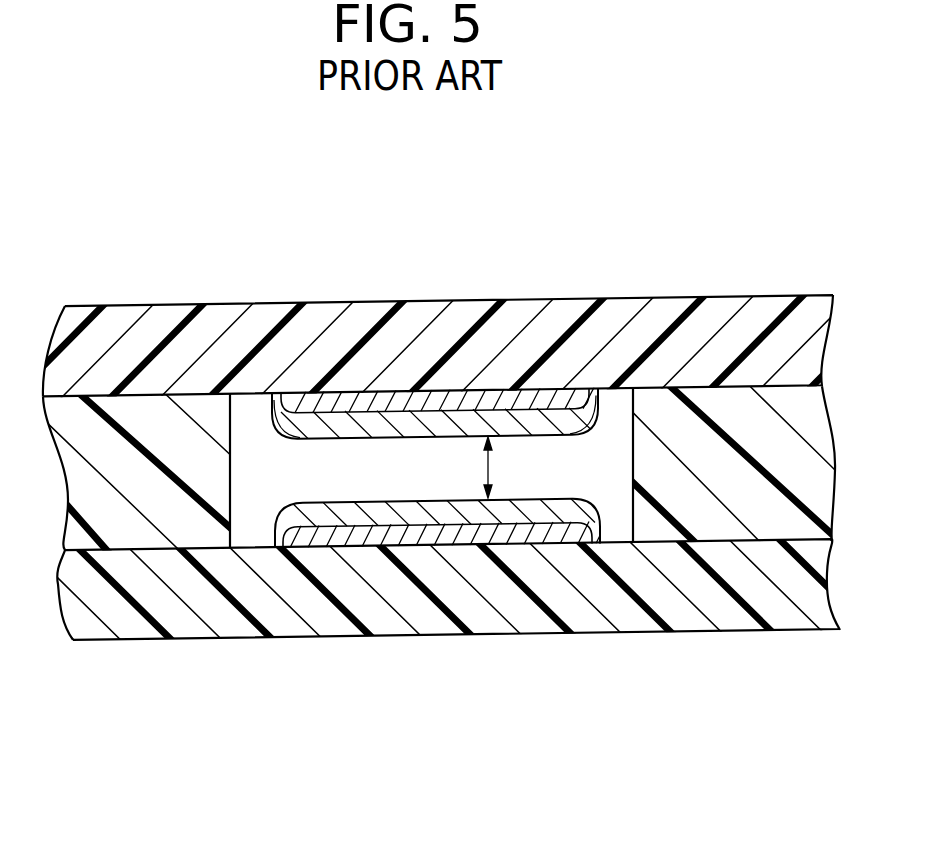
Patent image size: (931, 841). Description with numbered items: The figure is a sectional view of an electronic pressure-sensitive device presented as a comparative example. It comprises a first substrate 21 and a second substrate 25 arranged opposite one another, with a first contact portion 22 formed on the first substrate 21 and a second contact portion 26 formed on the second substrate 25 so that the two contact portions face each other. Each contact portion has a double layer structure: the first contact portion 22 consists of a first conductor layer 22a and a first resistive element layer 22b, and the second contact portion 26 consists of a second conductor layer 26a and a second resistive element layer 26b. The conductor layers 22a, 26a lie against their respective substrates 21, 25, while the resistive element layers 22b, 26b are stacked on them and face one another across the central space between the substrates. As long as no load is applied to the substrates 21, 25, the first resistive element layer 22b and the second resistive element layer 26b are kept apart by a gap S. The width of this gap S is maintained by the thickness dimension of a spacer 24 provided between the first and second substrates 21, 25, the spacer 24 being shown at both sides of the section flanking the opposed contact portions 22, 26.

The first substrate 21 is at (543, 325).
The first contact portion 22 is at (435, 303).
The first conductor layer 22a is at (345, 407).
The first resistive element layer 22b is at (440, 427).
The spacer 24 is at (138, 430).
The second substrate 25 is at (580, 588).
The second contact portion 26 is at (441, 646).
The second conductor layer 26a is at (340, 540).
The second resistive element layer 26b is at (473, 513).
The gap S is at (475, 467).